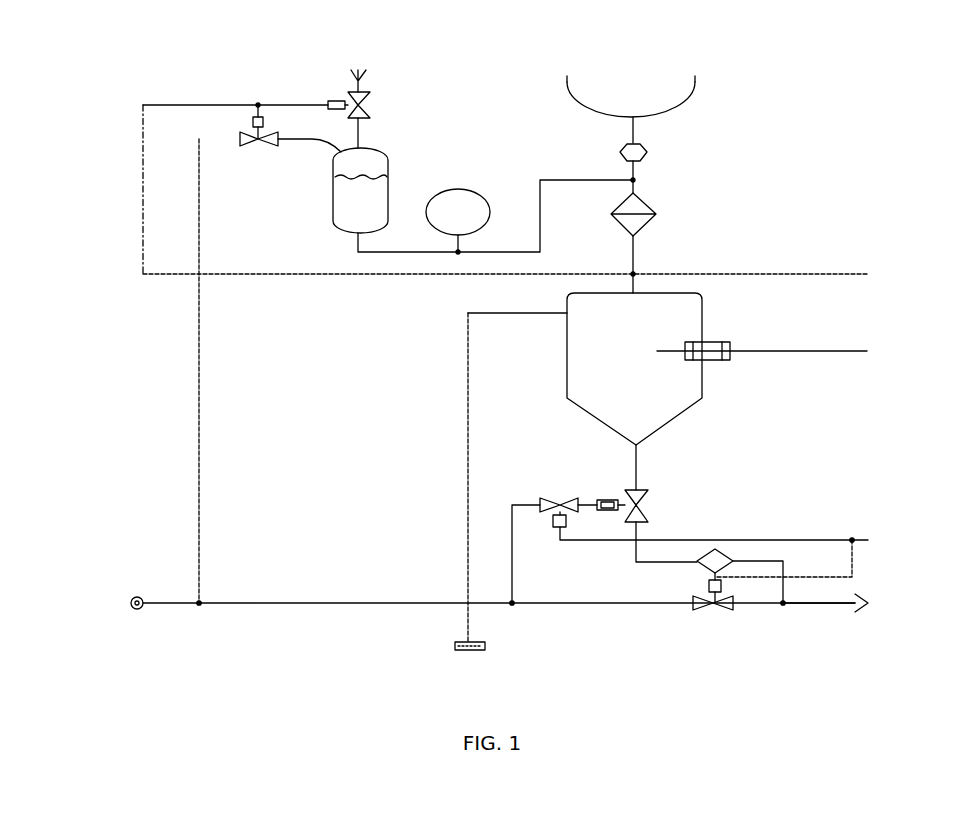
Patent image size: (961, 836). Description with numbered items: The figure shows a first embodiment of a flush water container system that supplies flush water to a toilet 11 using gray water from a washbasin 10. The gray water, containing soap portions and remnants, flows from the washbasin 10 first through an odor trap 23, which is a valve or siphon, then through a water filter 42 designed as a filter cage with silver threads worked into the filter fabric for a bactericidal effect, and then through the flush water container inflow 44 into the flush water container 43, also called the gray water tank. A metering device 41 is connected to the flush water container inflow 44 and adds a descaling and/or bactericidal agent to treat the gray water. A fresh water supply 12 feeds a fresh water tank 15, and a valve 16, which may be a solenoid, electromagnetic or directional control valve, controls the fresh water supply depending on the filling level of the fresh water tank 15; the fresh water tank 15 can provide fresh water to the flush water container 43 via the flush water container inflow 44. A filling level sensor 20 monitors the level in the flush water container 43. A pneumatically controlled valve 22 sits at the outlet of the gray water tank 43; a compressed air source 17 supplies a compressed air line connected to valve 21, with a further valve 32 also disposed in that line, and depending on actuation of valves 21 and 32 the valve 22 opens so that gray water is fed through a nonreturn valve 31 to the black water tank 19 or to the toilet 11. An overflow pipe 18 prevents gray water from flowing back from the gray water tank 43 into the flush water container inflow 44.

The washbasin 10 is at (695, 100).
The toilet 11 is at (902, 603).
The fresh water supply 12 is at (349, 74).
The fresh water tank 15 is at (333, 197).
The valve 16 is at (252, 123).
The compressed air source 17 is at (111, 600).
The overflow pipe 18 is at (468, 663).
The black water tank 19 is at (866, 603).
The filling level sensor 20 is at (728, 343).
The valve 21 is at (547, 502).
The pneumatically controlled valve 22 is at (643, 490).
The odor trap 23 is at (648, 150).
The nonreturn valve 31 is at (702, 568).
The valve 32 is at (727, 607).
The metering device 41 is at (470, 190).
The water filter 42 is at (652, 206).
The flush water container 43 is at (702, 300).
The flush water container inflow 44 is at (635, 258).